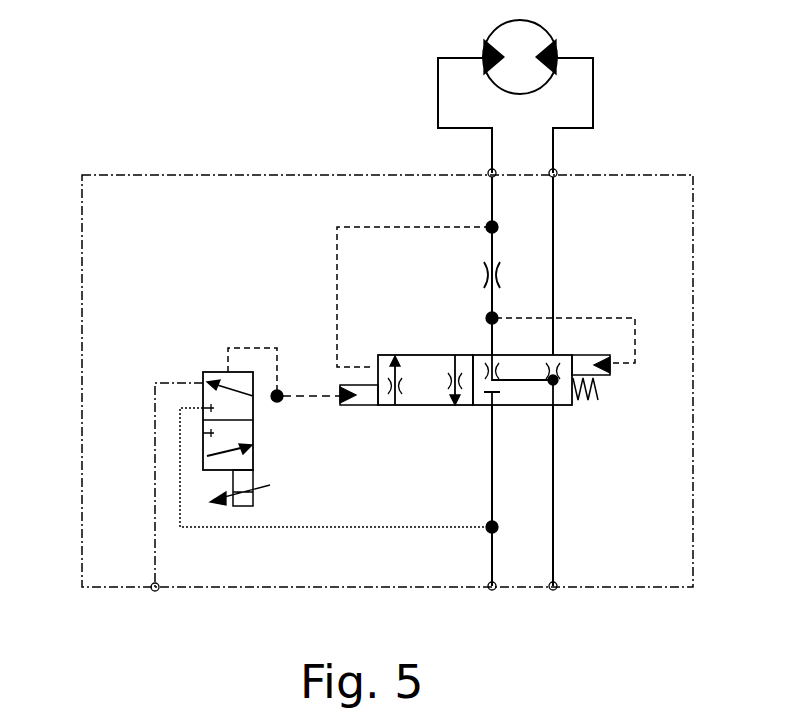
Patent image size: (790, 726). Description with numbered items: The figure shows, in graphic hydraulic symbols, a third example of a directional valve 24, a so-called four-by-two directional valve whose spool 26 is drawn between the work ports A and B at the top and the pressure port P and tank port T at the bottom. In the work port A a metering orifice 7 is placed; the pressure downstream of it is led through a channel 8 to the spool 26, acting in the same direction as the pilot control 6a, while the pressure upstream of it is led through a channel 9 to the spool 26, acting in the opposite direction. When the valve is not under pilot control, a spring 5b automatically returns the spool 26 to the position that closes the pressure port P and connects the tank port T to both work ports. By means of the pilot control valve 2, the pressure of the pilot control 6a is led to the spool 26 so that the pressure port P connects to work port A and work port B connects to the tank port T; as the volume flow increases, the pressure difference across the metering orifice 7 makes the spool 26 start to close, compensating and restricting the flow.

The pilot control valve 2 is at (349, 322).
The valve 24 is at (187, 173).
The channel 8 is at (391, 225).
The metering orifice 7 is at (503, 268).
The channel 9 is at (598, 320).
The spool 26 is at (427, 392).
The spring 5b is at (590, 400).
The pilot control 6a is at (345, 407).